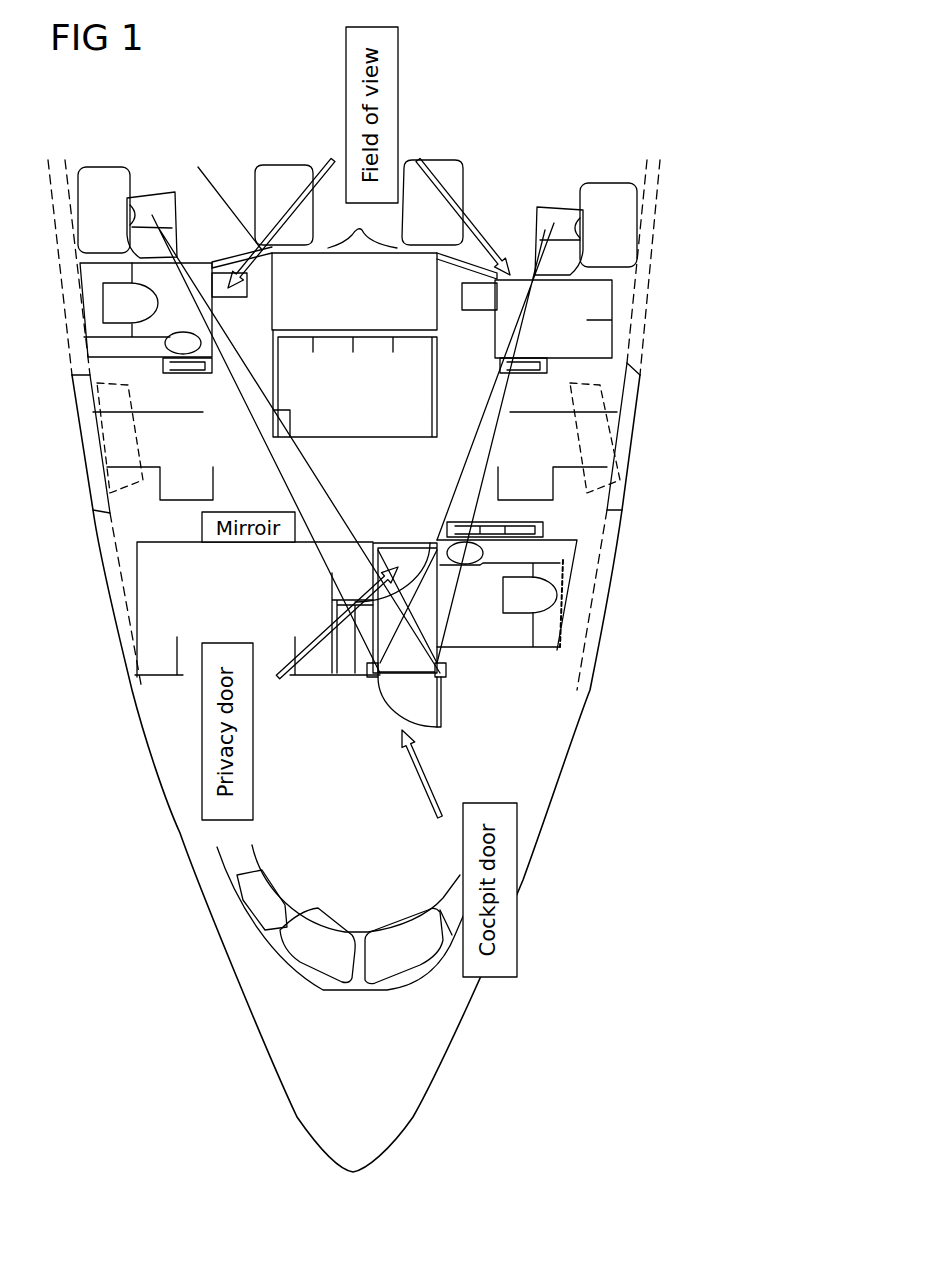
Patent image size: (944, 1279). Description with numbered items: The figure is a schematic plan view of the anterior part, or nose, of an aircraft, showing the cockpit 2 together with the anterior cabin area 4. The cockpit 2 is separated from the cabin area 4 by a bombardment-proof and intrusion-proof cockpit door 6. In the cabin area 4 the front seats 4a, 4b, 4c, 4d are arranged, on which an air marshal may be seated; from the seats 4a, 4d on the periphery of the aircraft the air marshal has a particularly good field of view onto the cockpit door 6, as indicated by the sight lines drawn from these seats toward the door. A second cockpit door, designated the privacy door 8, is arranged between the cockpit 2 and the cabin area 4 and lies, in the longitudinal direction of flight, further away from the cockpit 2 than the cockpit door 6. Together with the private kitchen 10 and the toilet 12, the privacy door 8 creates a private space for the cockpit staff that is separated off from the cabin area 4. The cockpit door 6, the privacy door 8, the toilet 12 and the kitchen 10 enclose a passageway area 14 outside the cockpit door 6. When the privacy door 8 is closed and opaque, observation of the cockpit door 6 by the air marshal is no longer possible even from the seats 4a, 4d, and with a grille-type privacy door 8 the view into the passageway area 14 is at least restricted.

The cockpit 2 is at (562, 717).
The cabin area 4 is at (190, 180).
The seat 4a is at (152, 188).
The seat 4b is at (277, 167).
The seat 4c is at (450, 167).
The seat 4d is at (552, 210).
The cockpit door 6 is at (442, 697).
The privacy door 8 is at (395, 540).
The private kitchen 10 is at (142, 627).
The toilet 12 is at (547, 573).
The passageway area 14 is at (418, 553).